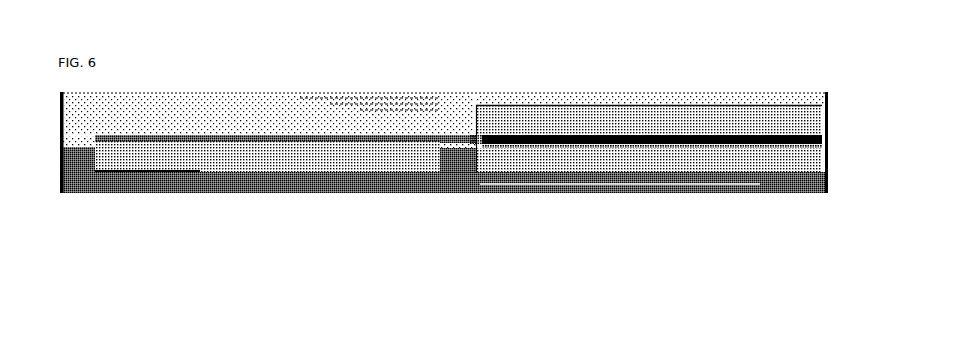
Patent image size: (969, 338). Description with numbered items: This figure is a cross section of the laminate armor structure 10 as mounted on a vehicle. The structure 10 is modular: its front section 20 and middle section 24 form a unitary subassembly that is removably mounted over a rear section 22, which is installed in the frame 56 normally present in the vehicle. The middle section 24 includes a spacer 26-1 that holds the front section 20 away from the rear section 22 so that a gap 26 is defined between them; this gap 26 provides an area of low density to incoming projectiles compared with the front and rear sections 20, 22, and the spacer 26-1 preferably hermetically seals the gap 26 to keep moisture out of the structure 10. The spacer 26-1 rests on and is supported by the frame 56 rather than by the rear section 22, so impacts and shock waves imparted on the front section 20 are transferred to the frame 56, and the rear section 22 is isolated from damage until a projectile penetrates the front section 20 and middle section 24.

The structure 10 is at (777, 80).
The front section 20 is at (690, 105).
The rear section 22 is at (173, 136).
The middle section 24 is at (748, 145).
The gap 26 is at (635, 143).
The spacer 26-1 is at (475, 142).
The frame 56 is at (468, 140).